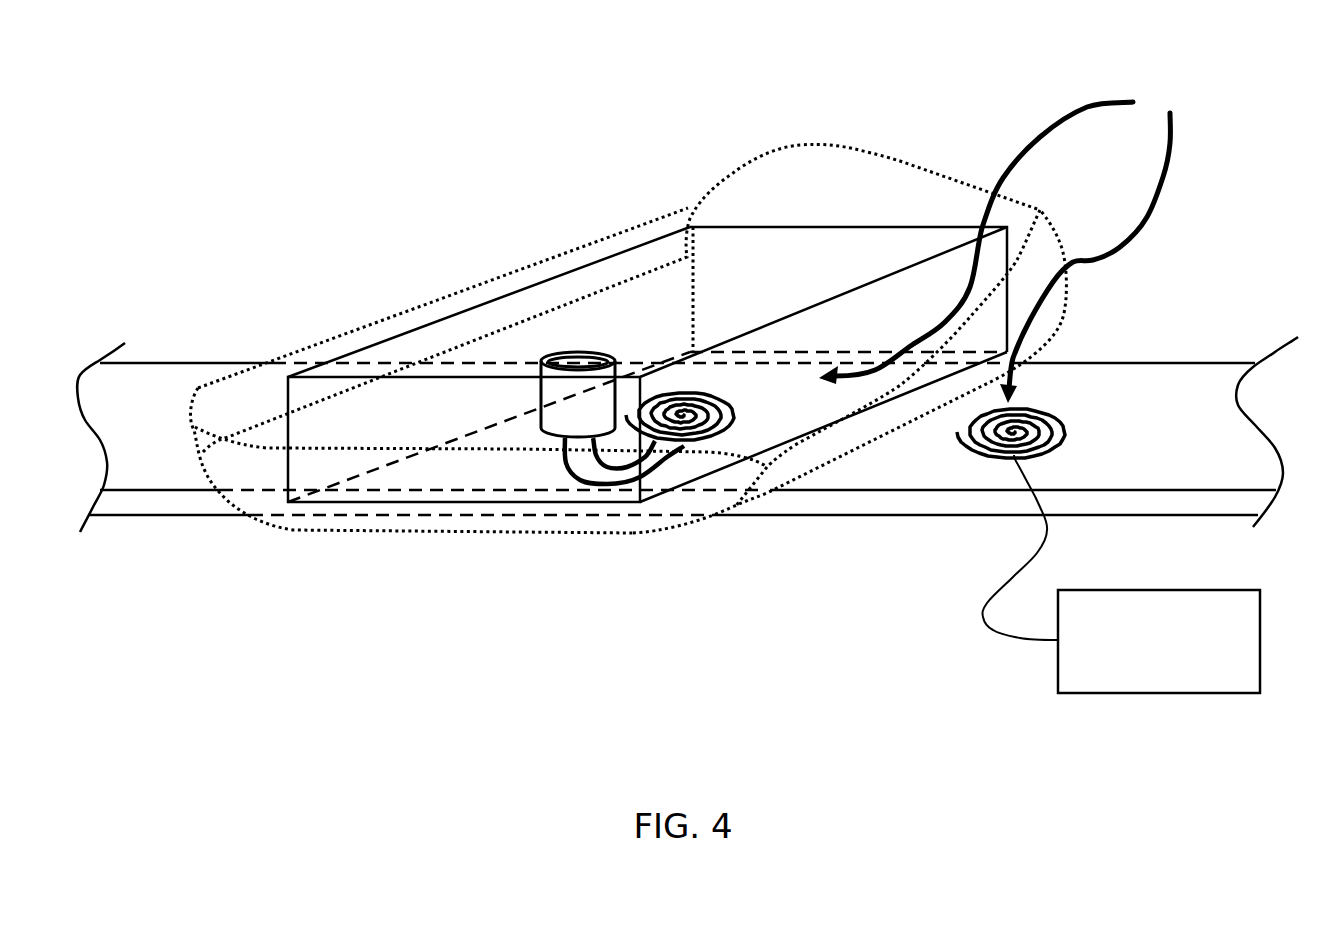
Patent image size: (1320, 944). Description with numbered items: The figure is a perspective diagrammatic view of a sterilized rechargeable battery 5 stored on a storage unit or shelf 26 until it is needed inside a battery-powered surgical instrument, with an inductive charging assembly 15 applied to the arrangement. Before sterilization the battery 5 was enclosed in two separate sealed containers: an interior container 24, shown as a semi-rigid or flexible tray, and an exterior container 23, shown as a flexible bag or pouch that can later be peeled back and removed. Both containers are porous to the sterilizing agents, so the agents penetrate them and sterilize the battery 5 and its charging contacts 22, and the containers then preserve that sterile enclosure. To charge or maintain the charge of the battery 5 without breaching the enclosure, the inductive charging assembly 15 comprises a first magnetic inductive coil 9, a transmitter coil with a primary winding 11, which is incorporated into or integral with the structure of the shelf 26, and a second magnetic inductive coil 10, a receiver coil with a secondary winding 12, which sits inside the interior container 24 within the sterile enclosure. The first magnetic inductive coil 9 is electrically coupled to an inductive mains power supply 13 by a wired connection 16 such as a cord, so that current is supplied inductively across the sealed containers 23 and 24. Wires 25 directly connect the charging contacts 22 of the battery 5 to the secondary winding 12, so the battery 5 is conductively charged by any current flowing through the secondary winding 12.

The battery 5 is at (568, 422).
The first magnetic inductive coil 9 is at (1033, 425).
The second magnetic inductive coil 10 is at (579, 376).
The primary winding 11 is at (967, 443).
The secondary winding 12 is at (735, 437).
The inductive mains power supply 13 is at (1157, 693).
The inductive charging assembly 15 is at (996, 240).
The wired connection 16 is at (993, 630).
The charging contacts 22 is at (499, 569).
The exterior container 23 is at (417, 300).
The interior container 24 is at (347, 350).
The wires 25 is at (612, 443).
The storage unit or shelf 26 is at (165, 450).